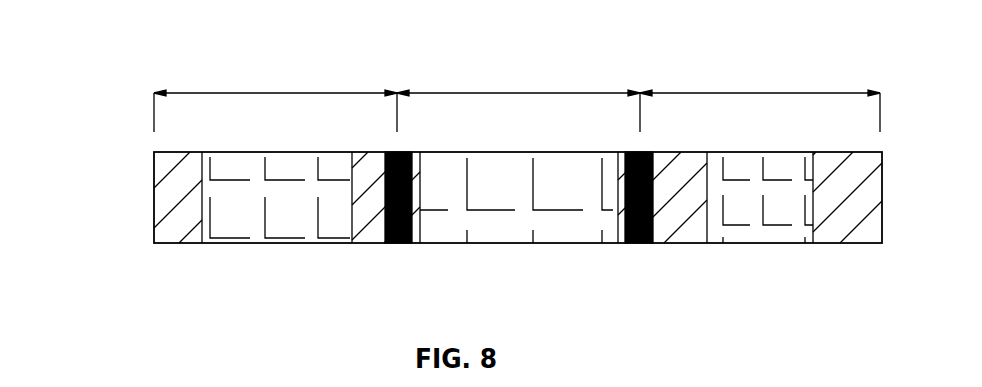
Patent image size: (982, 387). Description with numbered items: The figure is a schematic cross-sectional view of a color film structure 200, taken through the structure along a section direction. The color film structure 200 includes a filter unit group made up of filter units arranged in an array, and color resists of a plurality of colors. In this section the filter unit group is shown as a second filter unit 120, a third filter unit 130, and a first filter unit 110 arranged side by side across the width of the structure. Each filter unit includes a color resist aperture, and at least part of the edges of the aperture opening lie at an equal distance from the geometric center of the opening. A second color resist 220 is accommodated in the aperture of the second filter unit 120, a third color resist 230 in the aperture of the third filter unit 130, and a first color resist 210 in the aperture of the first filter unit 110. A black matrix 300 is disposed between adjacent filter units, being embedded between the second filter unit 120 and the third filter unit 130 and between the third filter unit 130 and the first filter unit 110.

The color film structure 200 is at (103, 42).
The first filter unit 110 is at (761, 153).
The second filter unit 120 is at (287, 153).
The third filter unit 130 is at (552, 153).
The first color resist 210 is at (772, 225).
The second color resist 220 is at (280, 223).
The third color resist 230 is at (522, 223).
The black matrix 300 is at (405, 243).